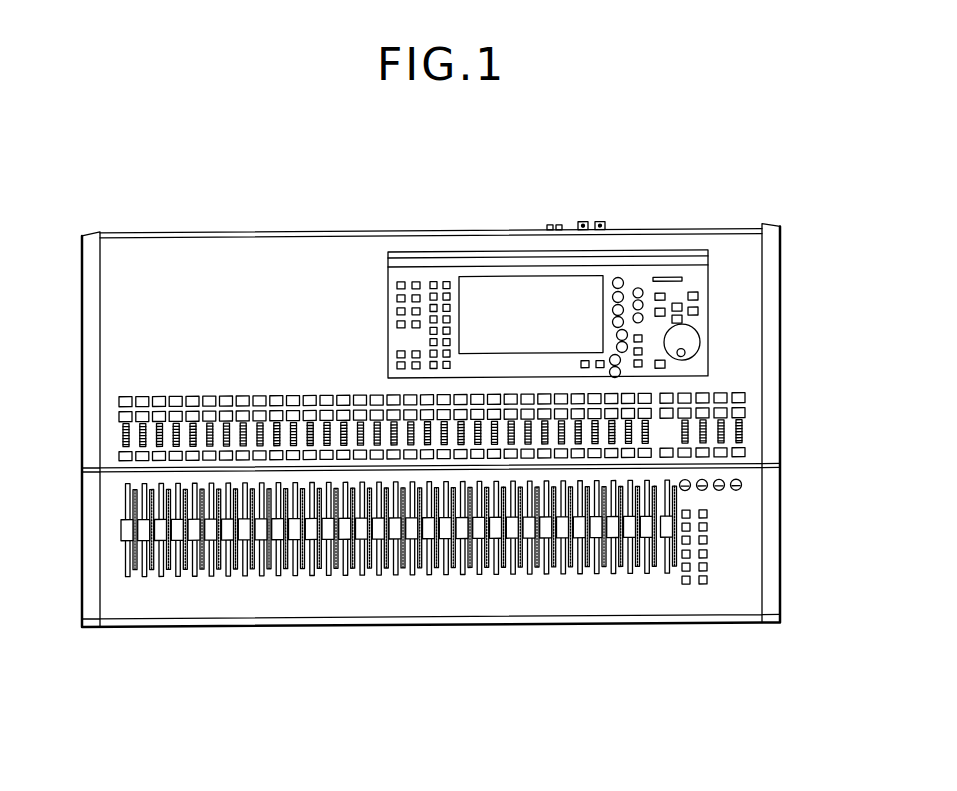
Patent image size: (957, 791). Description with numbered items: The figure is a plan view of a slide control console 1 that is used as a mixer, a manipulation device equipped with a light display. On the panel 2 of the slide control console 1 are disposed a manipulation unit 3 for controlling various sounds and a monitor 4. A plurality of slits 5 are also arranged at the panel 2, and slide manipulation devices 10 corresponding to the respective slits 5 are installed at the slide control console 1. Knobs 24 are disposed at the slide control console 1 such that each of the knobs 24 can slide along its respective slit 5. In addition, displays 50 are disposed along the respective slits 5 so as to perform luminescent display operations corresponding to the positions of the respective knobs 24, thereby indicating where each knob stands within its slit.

The slide control console 1 is at (450, 213).
The panel 2 is at (262, 238).
The manipulation unit 3 is at (715, 318).
The monitor 4 is at (527, 300).
The slits 5 is at (612, 570).
The slide manipulation devices 10 is at (545, 580).
The knobs 24 is at (660, 546).
The displays 50 is at (575, 576).